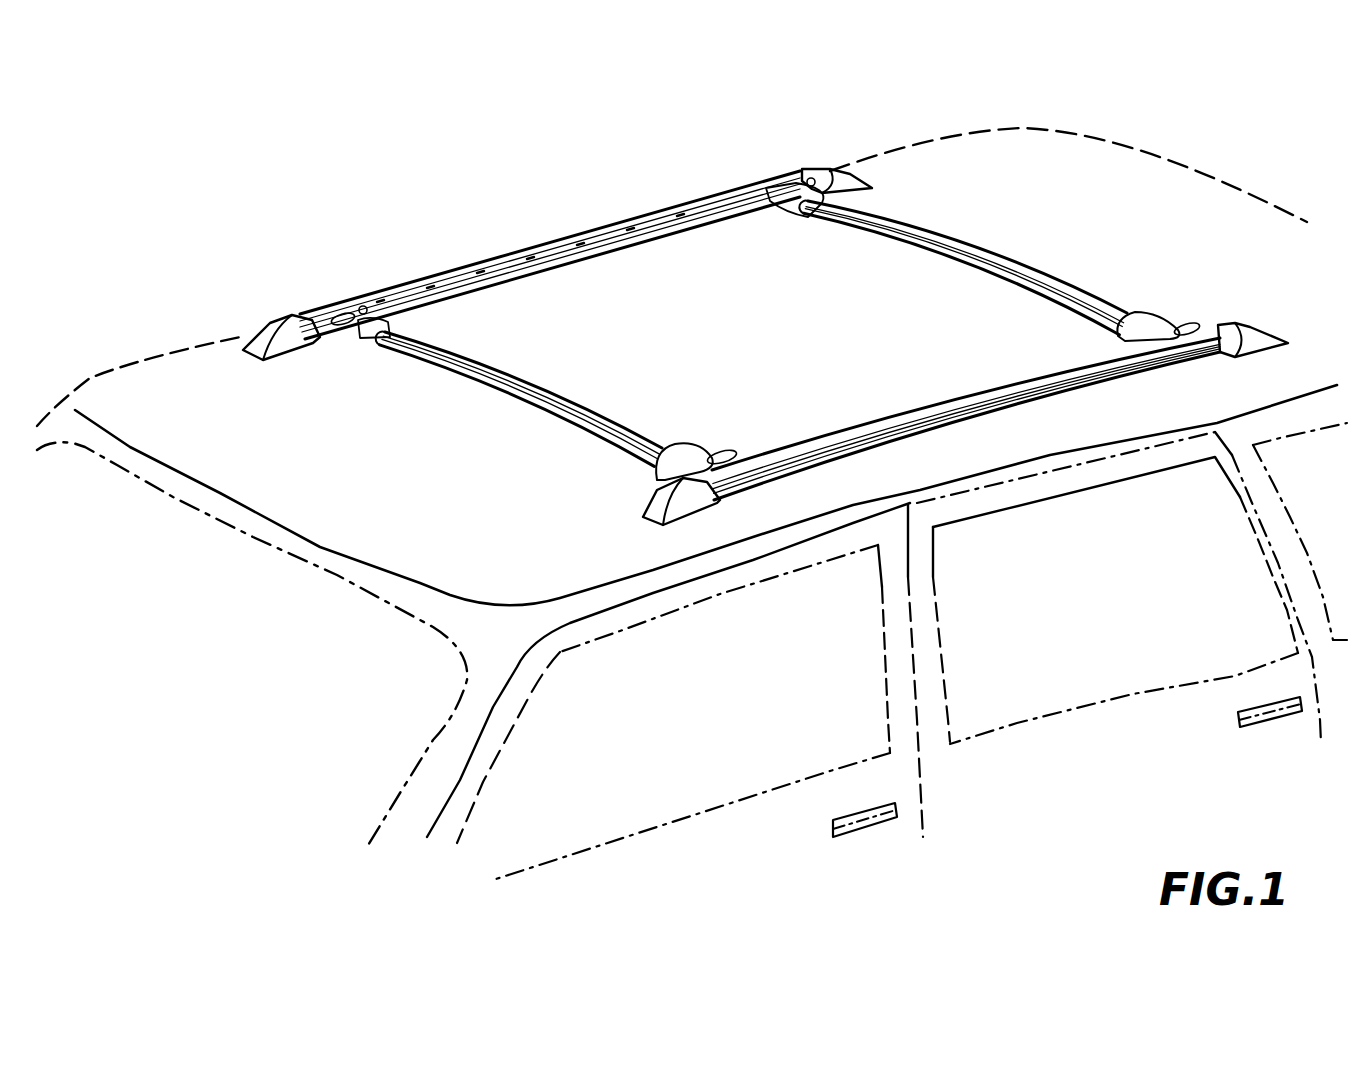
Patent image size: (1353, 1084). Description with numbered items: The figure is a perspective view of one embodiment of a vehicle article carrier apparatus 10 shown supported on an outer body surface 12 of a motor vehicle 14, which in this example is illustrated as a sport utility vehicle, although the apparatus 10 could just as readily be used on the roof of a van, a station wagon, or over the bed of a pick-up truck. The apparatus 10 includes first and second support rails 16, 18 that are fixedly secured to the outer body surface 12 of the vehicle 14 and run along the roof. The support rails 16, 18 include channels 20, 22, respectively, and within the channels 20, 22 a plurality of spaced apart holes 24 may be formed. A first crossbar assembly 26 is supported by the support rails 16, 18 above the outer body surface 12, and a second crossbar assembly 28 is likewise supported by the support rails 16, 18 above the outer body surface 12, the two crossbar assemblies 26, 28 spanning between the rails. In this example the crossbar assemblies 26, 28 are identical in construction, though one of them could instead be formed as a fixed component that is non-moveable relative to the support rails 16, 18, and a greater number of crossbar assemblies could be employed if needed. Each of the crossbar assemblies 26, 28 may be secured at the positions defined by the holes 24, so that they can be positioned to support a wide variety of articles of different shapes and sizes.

The vehicle article carrier apparatus 10 is at (334, 158).
The outer body surface 12 is at (206, 358).
The motor vehicle 14 is at (1024, 822).
The first support rail 16 is at (847, 434).
The second support rail 18 is at (541, 266).
The channel 20 is at (933, 393).
The channel 22 is at (643, 240).
The holes 24 is at (437, 299).
The first crossbar assembly 26 is at (584, 406).
The second crossbar assembly 28 is at (953, 238).